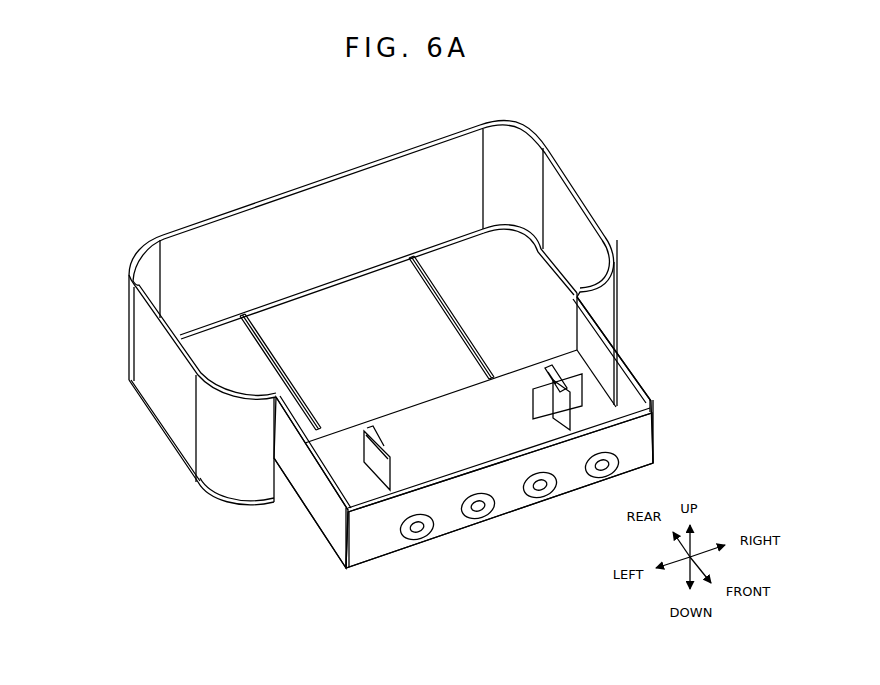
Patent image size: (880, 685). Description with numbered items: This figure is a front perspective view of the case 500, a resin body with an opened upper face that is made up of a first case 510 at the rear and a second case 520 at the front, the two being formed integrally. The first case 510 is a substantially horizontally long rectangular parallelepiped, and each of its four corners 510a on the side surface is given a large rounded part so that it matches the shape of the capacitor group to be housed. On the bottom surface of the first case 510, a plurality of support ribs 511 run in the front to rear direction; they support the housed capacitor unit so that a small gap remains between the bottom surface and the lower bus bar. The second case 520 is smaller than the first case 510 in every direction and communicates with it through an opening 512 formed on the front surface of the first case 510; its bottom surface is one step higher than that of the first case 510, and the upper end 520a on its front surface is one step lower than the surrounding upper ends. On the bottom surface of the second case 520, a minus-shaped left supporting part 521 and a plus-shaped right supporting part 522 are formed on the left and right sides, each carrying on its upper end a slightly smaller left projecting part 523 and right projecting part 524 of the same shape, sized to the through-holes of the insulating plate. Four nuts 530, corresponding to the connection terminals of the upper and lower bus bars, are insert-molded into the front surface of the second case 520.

The case 500 is at (305, 180).
The first case 510 is at (576, 172).
The corners 510a is at (508, 163).
The support ribs 511 is at (287, 369).
The opening 512 is at (560, 310).
The second case 520 is at (639, 370).
The upper end 520a is at (507, 458).
The left supporting part 521 is at (318, 481).
The right supporting part 522 is at (583, 394).
The left projecting part 523 is at (378, 431).
The right projecting part 524 is at (557, 377).
The nuts 530 is at (490, 512).